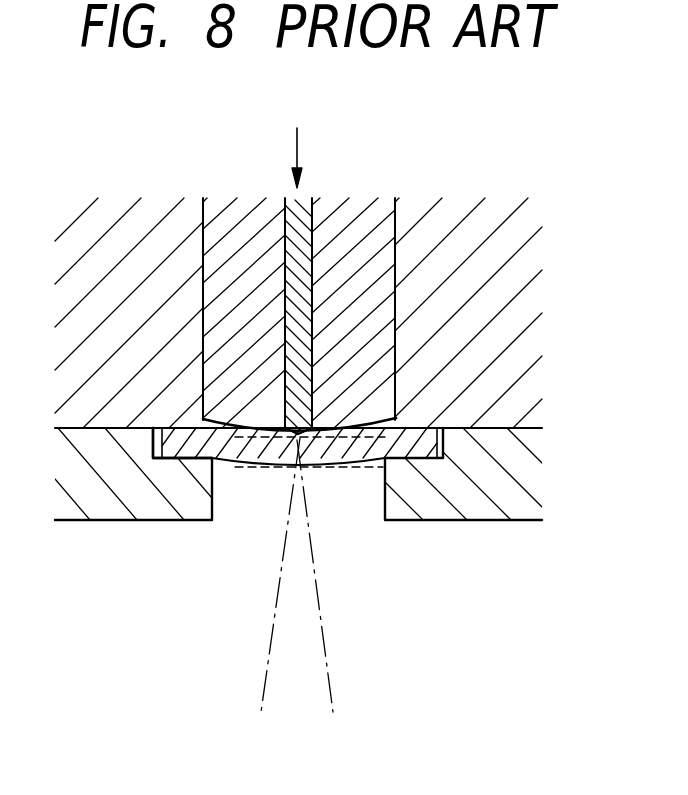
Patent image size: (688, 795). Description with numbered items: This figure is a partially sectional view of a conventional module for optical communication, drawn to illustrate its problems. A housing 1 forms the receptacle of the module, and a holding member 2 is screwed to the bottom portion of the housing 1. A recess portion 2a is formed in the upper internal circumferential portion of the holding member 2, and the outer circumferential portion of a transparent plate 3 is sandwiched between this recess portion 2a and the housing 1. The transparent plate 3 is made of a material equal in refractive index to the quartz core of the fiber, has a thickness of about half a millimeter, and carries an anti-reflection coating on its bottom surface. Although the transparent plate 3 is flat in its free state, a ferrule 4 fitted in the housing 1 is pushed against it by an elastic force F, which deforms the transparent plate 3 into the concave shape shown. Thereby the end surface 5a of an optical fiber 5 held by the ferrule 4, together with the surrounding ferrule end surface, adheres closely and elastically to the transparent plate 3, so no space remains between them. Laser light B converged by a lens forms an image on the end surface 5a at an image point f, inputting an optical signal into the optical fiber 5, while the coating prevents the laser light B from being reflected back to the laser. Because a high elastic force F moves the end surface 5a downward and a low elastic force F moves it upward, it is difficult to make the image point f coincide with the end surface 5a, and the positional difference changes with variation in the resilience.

The housing 1 is at (468, 318).
The holding member 2 is at (483, 478).
The recess portion 2a is at (193, 456).
The transparent plate 3 is at (350, 452).
The ferrule 4 is at (345, 265).
The optical fiber 5 is at (290, 236).
The end surface 5a is at (303, 455).
The image point f is at (271, 466).
The elastic force F is at (294, 140).
The laser light B is at (315, 580).